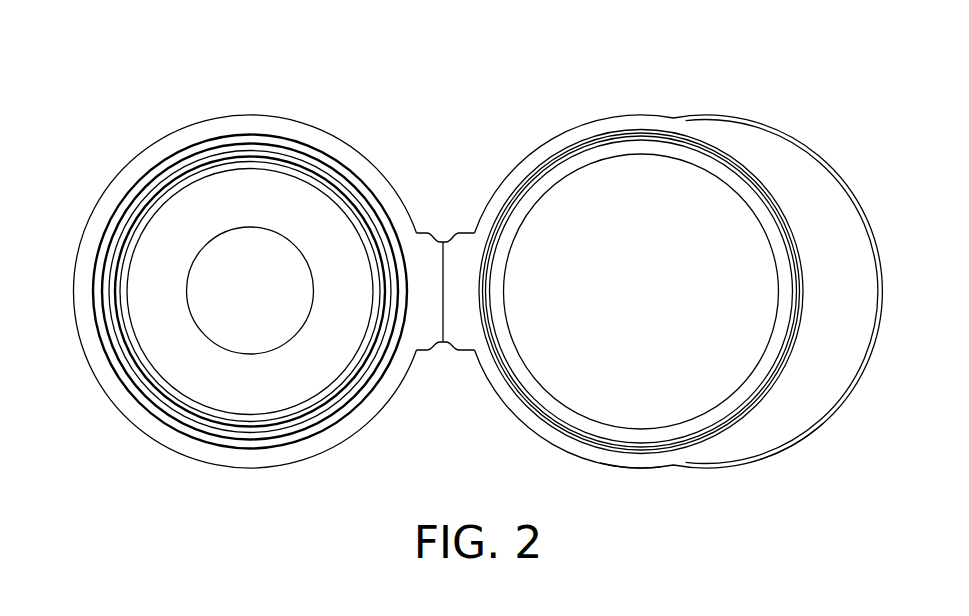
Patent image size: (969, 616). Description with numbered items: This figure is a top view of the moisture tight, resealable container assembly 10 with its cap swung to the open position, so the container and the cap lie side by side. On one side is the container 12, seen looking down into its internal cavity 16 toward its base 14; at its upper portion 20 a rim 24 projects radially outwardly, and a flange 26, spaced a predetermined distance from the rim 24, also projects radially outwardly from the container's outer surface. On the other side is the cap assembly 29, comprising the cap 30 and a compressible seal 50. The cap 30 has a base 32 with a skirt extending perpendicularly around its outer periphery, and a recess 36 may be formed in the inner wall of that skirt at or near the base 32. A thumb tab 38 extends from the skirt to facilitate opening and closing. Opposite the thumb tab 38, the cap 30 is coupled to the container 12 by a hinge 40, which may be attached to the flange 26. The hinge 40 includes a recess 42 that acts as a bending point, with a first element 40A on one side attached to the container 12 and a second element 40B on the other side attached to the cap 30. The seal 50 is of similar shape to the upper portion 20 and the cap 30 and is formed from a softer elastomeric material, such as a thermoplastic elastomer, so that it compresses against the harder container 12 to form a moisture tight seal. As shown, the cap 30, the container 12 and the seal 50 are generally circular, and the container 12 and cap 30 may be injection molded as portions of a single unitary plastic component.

The container assembly 10 is at (703, 277).
The container 12 is at (232, 128).
The base 14 is at (162, 247).
The internal cavity 16 is at (237, 304).
The upper portion 20 is at (148, 180).
The rim 24 is at (117, 355).
The flange 26 is at (76, 258).
The cap assembly 29 is at (780, 476).
The cap 30 is at (680, 128).
The base 32 is at (628, 212).
The recess 36 is at (628, 458).
The thumb tab 38 is at (842, 298).
The hinge 40 is at (444, 267).
The first element 40A is at (427, 262).
The second element 40B is at (462, 262).
The recess 42 is at (447, 315).
The compressible seal 50 is at (742, 186).